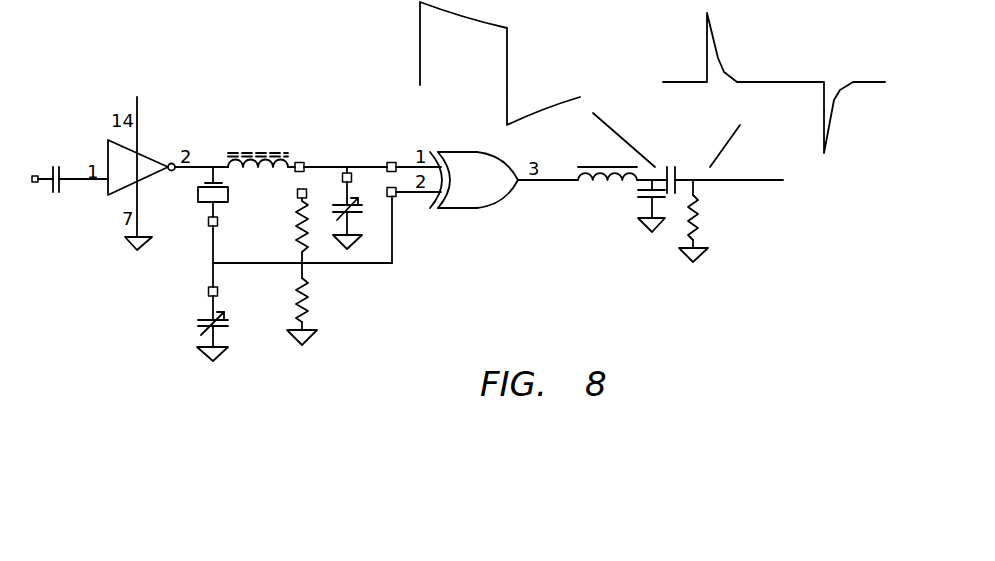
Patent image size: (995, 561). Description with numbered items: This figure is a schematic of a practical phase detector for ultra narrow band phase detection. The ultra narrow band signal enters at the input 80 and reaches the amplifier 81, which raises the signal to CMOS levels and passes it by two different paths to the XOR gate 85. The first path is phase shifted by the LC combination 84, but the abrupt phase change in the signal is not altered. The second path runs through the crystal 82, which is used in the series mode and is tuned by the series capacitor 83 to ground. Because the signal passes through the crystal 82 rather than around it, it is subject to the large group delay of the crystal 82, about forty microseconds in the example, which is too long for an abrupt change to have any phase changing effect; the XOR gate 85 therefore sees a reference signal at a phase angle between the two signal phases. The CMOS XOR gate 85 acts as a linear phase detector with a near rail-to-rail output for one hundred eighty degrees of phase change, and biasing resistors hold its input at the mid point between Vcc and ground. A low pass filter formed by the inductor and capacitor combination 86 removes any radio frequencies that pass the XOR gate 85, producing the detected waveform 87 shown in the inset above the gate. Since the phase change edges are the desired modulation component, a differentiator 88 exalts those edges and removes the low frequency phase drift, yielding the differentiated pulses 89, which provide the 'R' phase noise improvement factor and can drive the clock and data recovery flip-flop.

The input terminal with coupling capacitor 80 is at (58, 160).
The amplifier 81 is at (152, 150).
The crystal 82 is at (203, 210).
The series capacitor 83 is at (193, 337).
The LC combination 84 is at (338, 163).
The XOR gate 85 is at (477, 208).
The inductor and capacitor combination 86 is at (633, 205).
The detected waveform 87 is at (475, 79).
The differentiator 88 is at (700, 208).
The differentiated pulses 89 is at (789, 132).